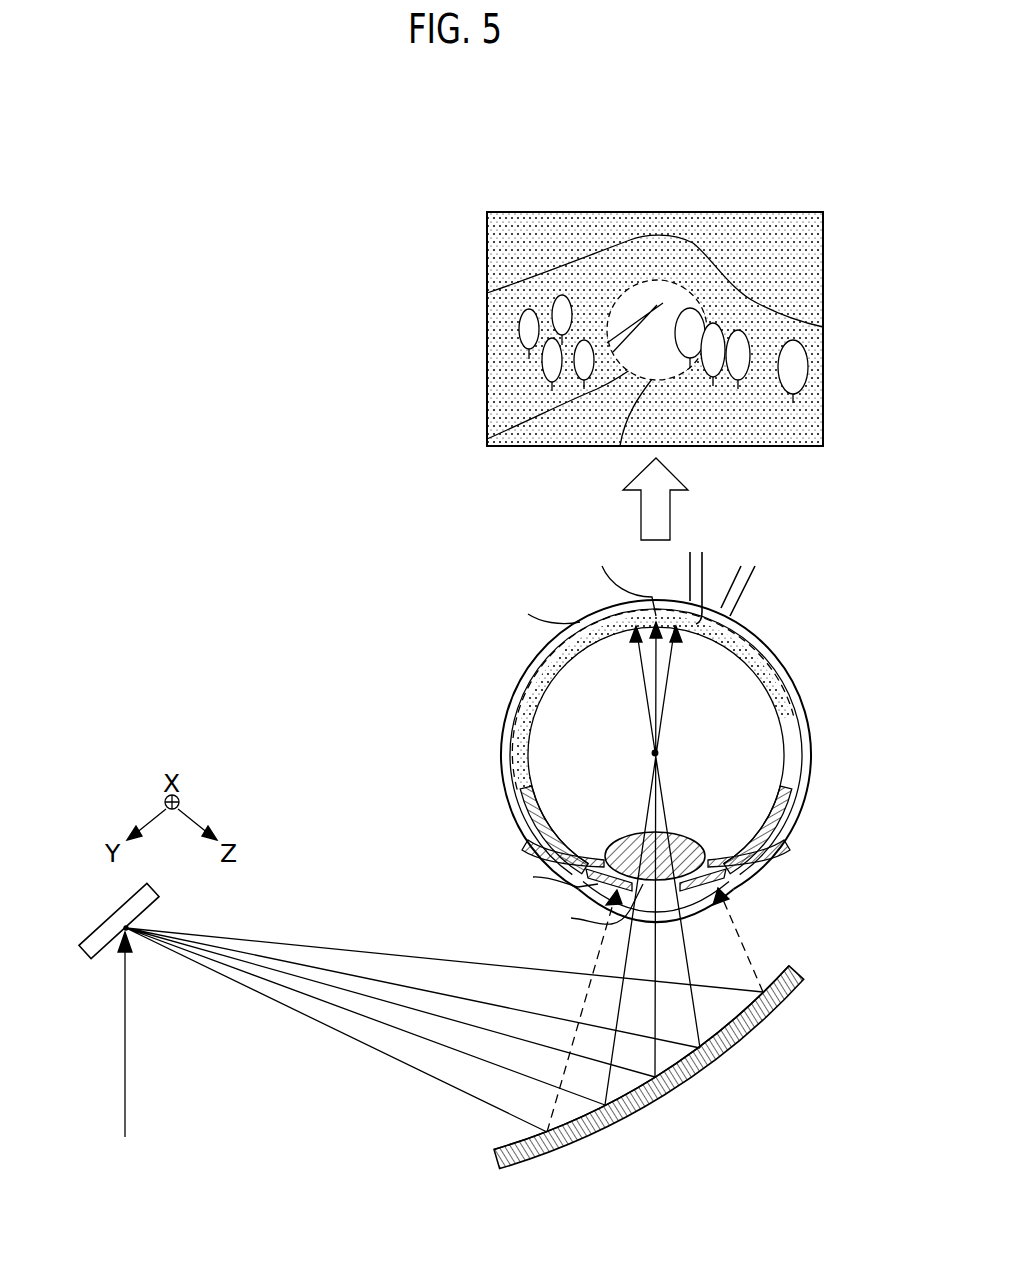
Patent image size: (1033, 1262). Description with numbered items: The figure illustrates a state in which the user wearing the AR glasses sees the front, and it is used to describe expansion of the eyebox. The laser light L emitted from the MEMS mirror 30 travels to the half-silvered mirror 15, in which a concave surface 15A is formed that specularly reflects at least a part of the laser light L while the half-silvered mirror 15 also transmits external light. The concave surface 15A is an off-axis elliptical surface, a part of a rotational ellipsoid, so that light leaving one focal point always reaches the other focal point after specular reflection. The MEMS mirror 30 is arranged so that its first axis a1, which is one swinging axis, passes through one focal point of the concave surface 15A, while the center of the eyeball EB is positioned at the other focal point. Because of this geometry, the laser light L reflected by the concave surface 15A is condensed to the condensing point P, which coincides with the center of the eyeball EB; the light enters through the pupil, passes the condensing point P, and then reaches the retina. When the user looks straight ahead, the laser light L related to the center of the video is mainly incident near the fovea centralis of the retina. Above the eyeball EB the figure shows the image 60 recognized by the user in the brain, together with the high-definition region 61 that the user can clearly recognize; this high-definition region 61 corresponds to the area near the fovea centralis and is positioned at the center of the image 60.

The image 60 is at (753, 211).
The high-definition region 61 is at (588, 232).
The MEMS mirror 30 is at (150, 897).
The half-silvered mirror 15 is at (736, 1054).
The concave surface 15A is at (789, 966).
The eyeball EB is at (471, 666).
The condensing point P is at (658, 753).
The laser light L is at (392, 953).
The first axis a1 is at (121, 922).